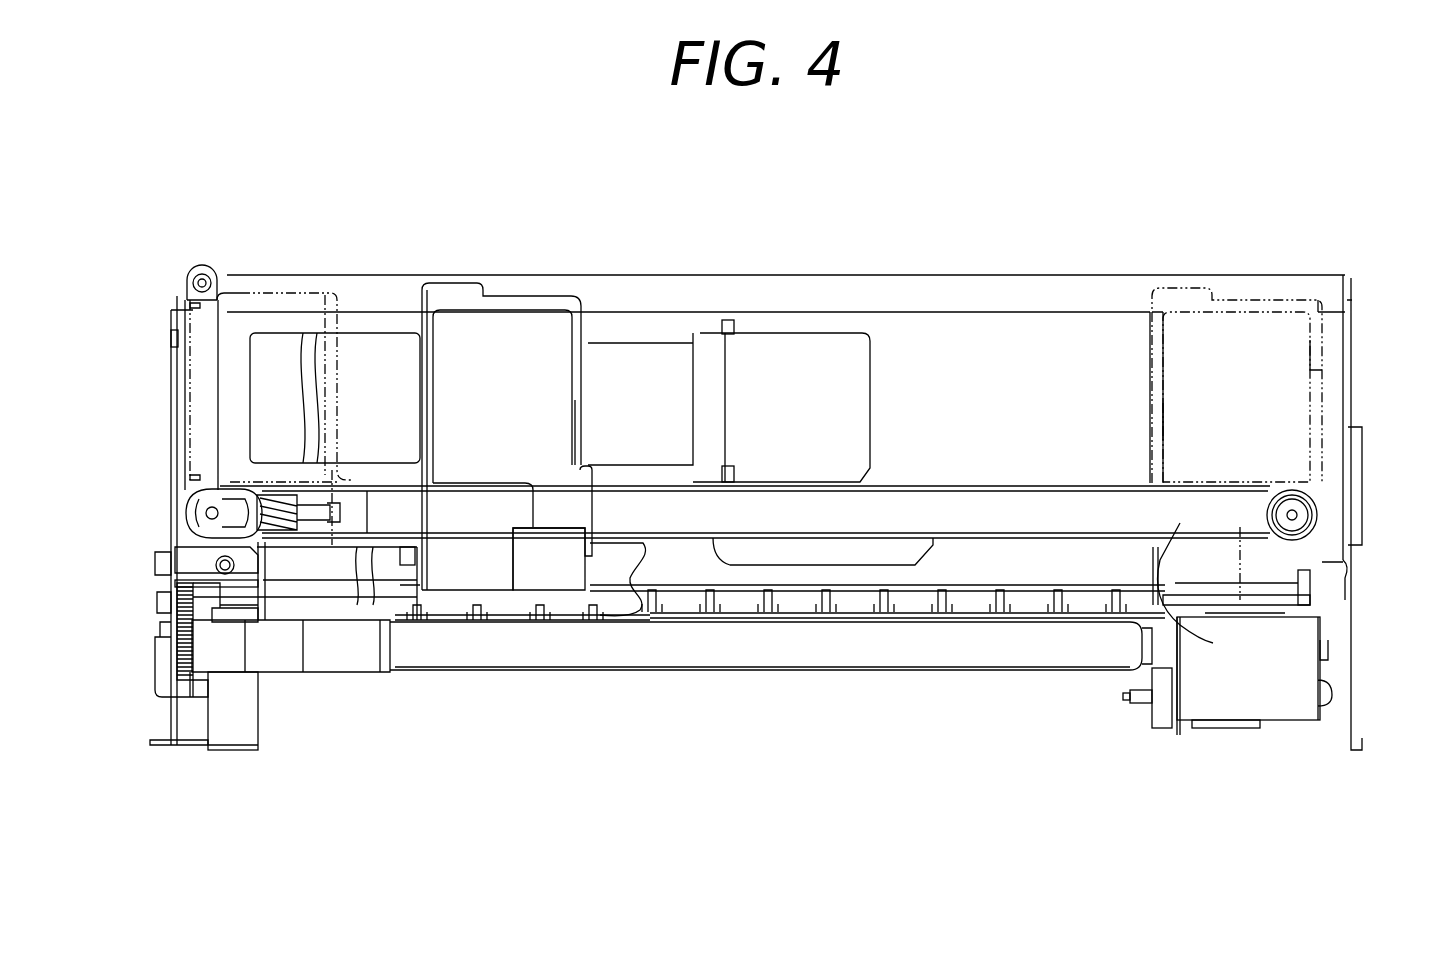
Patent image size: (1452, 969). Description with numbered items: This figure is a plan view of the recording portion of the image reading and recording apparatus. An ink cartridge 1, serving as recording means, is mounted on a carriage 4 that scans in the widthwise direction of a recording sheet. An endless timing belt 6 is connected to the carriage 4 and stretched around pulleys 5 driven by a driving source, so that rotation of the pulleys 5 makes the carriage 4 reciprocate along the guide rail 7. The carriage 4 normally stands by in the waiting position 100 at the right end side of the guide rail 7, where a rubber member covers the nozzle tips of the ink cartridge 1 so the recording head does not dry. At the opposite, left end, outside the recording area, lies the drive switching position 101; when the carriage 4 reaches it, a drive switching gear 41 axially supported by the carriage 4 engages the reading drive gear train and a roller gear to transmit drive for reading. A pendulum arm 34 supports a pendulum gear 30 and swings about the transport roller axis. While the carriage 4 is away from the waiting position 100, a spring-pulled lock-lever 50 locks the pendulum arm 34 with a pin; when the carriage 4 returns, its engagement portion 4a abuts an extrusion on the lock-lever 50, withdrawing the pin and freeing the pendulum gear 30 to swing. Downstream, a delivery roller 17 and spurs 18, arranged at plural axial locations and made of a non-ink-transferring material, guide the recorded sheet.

The ink cartridge 1 is at (525, 328).
The carriage 4 is at (575, 306).
The engagement portion 4a is at (578, 570).
The pulleys 5 is at (202, 502).
The timing belt 6 is at (798, 539).
The guide rail 7 is at (785, 290).
The delivery roller 17 is at (530, 660).
The spurs 18 is at (771, 612).
The pendulum gear 30 is at (1148, 718).
The pendulum arm 34 is at (1172, 653).
The drive switching gear 41 is at (417, 578).
The lock-lever 50 is at (1310, 602).
The waiting position 100 is at (1238, 326).
The drive switching position 101 is at (256, 325).